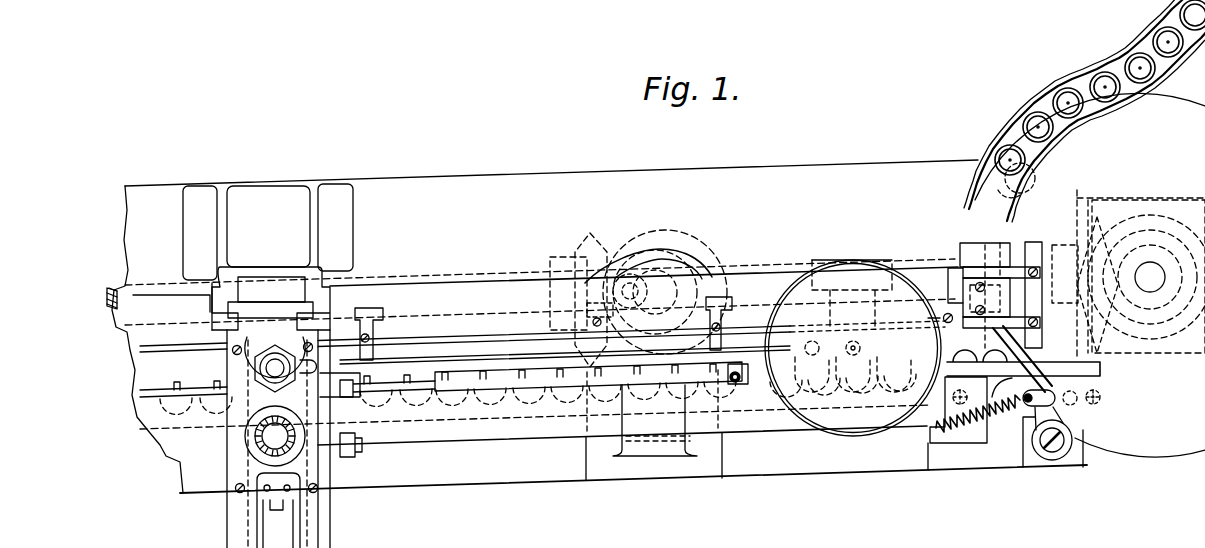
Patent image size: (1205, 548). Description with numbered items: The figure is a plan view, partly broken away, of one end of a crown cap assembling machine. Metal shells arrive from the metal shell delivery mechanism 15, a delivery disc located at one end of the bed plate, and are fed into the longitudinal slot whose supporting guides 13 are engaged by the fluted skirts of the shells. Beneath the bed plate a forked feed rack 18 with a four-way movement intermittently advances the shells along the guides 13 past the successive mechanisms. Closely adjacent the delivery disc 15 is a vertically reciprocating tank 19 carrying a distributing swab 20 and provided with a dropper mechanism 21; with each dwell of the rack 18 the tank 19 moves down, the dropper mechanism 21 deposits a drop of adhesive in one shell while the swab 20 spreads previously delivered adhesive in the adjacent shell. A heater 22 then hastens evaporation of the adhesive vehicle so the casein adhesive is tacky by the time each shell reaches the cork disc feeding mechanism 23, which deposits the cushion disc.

The supporting guides 13 is at (437, 343).
The metal shell delivery mechanism 15 is at (1084, 228).
The forked feed rack 18 is at (522, 368).
The tank 19 is at (903, 265).
The distributing swab 20 is at (797, 400).
The dropper mechanism 21 is at (860, 348).
The heater 22 is at (580, 382).
The cork disc feeding mechanism 23 is at (257, 415).